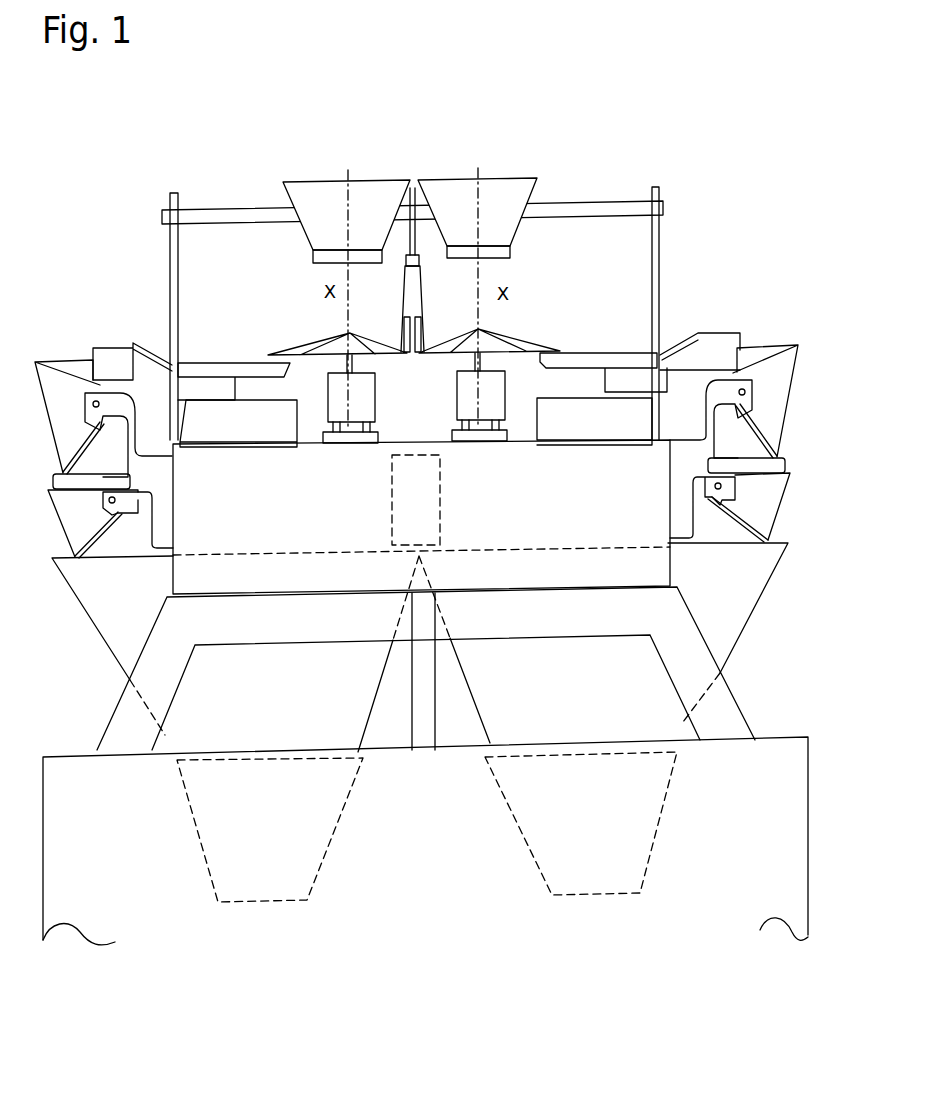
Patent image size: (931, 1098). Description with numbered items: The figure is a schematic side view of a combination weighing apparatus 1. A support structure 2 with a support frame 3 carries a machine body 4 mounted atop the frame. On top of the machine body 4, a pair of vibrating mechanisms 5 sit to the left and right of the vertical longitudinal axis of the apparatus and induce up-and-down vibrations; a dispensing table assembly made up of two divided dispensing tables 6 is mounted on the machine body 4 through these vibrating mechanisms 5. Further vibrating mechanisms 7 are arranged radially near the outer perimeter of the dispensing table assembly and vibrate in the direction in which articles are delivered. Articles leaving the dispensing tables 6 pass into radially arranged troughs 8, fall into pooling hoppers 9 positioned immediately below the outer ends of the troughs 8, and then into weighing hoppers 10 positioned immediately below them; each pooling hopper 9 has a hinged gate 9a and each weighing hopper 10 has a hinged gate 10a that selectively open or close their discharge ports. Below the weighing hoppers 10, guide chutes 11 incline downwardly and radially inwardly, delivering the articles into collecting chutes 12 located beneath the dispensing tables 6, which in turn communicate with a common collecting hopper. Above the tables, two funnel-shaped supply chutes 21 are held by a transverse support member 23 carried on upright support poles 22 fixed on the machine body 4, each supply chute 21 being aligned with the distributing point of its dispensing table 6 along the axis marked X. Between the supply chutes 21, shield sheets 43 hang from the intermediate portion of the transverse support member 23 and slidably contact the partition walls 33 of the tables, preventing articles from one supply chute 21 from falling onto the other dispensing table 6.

The combination weighing apparatus 1 is at (771, 236).
The support structure 2 is at (810, 773).
The support frame 3 is at (748, 715).
The machine body 4 is at (394, 448).
The vibrating mechanism 5 is at (375, 385).
The divided dispensing table 6 is at (298, 347).
The vibrating mechanism 7 is at (238, 428).
The trough 8 is at (117, 348).
The pooling hopper 9 is at (63, 362).
The gate 9a is at (83, 438).
The weighing hopper 10 is at (53, 503).
The gate 10a is at (105, 523).
The guide chute 11 is at (85, 598).
The collecting chute 12 is at (187, 805).
The supply chute 21 is at (307, 238).
The upright support pole 22 is at (170, 256).
The transverse support member 23 is at (585, 200).
The partition wall 33 is at (410, 357).
The shield sheet 43 is at (403, 312).